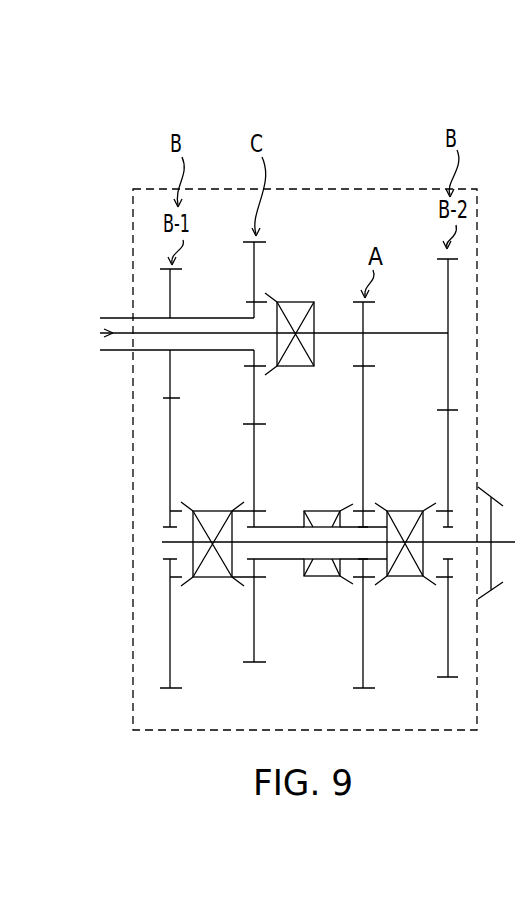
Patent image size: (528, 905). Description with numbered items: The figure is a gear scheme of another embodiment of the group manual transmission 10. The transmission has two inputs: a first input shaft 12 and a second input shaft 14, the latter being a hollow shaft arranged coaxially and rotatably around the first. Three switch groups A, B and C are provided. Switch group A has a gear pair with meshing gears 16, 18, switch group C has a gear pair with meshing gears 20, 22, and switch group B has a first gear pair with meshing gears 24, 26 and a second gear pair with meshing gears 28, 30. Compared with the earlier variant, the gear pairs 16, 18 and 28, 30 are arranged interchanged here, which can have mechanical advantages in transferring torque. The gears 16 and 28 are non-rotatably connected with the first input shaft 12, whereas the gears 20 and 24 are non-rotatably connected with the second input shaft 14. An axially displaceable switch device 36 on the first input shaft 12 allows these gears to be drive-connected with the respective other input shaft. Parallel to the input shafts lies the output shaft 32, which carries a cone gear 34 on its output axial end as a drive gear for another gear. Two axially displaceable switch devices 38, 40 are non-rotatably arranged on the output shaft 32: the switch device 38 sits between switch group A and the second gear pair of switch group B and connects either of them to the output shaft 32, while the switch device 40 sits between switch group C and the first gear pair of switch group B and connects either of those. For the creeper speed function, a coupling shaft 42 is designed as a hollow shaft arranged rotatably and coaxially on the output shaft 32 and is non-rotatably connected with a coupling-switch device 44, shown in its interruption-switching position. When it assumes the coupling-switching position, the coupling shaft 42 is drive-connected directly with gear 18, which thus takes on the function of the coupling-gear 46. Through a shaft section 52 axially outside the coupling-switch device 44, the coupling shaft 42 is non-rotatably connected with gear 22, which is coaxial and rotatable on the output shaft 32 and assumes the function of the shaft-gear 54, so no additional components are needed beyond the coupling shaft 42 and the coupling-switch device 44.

The group manual transmission 10 is at (320, 115).
The first input shaft 12 is at (119, 352).
The second input shaft 14 is at (118, 317).
The gear 16 is at (366, 316).
The gear 18 is at (365, 424).
The gear 20 is at (257, 265).
The gear 22 is at (255, 454).
The gear 24 is at (172, 291).
The gear 26 is at (172, 430).
The gear 28 is at (449, 323).
The gear 30 is at (447, 460).
The output shaft 32 is at (278, 543).
The cone gear 34 is at (480, 488).
The switch device 36 is at (303, 368).
The switch device 38 is at (402, 511).
The switch device 40 is at (206, 580).
The coupling shaft 42 is at (285, 568).
The coupling-switch device 44 is at (328, 578).
The coupling-gear 46 is at (365, 666).
The shaft section 52 is at (255, 527).
The shaft-gear 54 is at (270, 625).